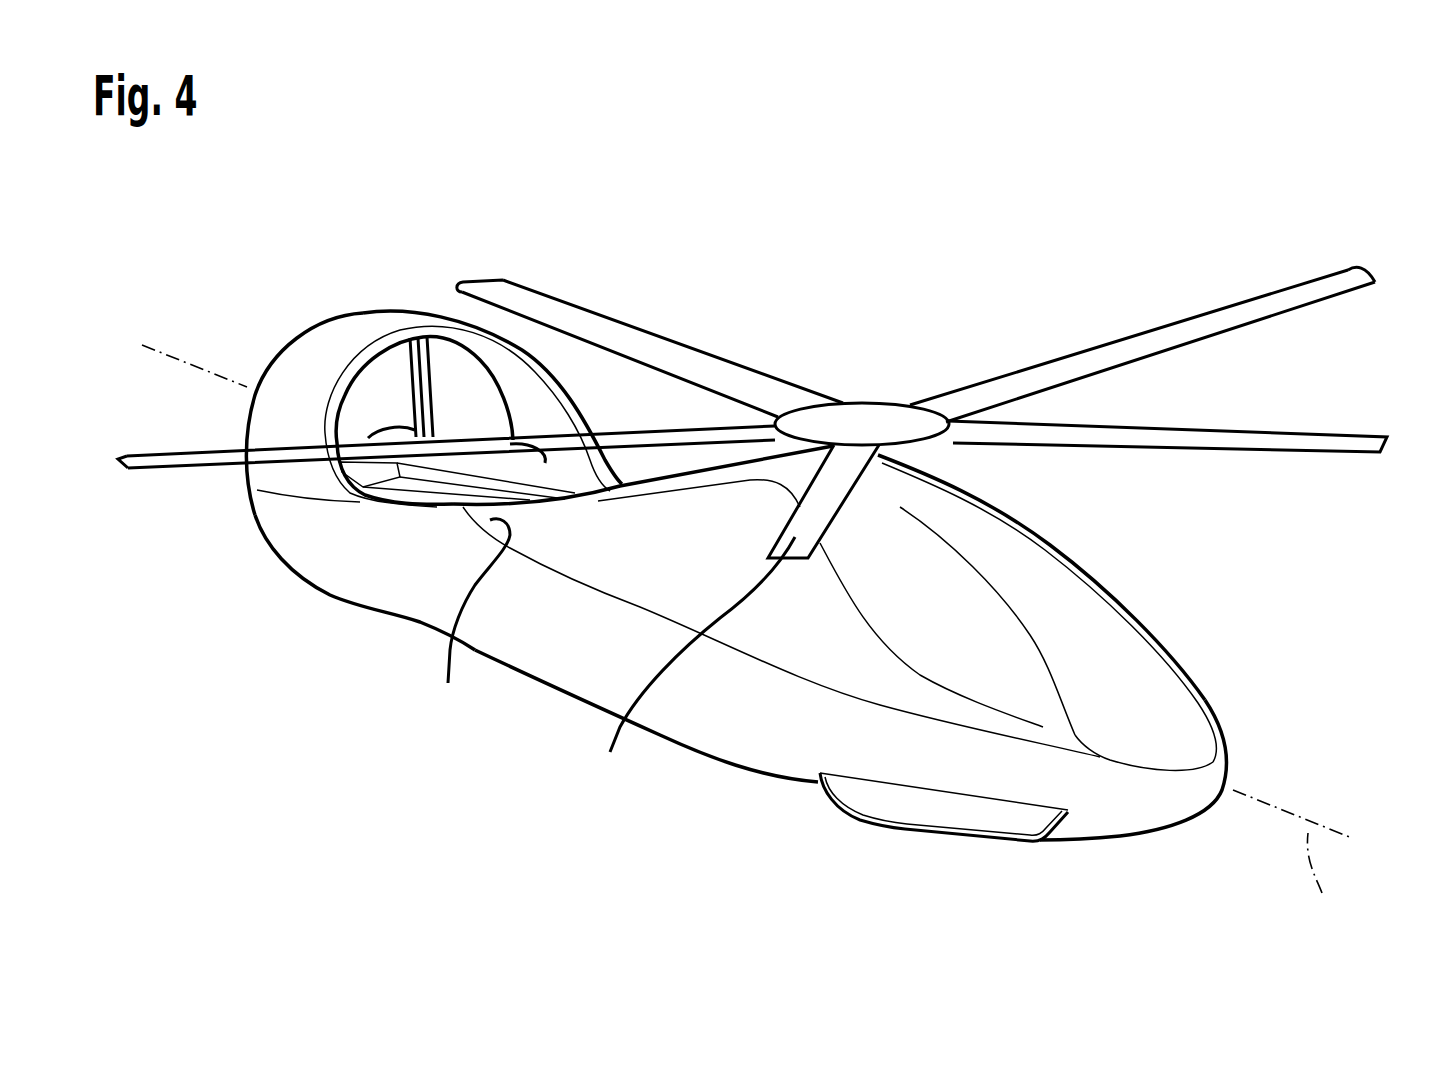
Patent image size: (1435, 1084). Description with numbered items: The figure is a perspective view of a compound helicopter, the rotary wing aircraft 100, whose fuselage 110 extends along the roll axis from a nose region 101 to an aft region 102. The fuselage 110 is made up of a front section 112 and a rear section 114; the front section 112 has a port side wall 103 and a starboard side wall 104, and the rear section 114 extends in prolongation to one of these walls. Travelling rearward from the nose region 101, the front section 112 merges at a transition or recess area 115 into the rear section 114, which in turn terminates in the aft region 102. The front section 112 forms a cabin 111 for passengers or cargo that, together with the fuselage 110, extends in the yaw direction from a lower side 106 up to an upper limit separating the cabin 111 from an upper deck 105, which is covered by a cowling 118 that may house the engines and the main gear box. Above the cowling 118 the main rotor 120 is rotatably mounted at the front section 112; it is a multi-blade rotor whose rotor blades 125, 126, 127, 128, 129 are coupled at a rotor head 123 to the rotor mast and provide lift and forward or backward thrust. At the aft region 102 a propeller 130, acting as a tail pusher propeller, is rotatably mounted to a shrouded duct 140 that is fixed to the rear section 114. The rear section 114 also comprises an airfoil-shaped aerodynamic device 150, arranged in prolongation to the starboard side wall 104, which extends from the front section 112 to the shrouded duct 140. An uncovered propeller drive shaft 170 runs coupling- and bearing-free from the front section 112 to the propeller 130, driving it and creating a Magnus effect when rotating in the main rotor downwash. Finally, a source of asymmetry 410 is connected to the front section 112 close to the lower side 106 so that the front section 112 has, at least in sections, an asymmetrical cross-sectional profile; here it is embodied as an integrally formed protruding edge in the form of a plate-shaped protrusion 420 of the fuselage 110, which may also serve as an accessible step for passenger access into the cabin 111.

The rotary wing aircraft 100 is at (1254, 210).
The nose region 101 is at (1215, 809).
The aft region 102 is at (250, 366).
The port side wall 103 is at (1072, 557).
The starboard side wall 104 is at (825, 663).
The upper deck 105 is at (950, 510).
The lower side 106 is at (774, 788).
The fuselage 110 is at (1157, 708).
The cabin 111 is at (1080, 641).
The front section 112 is at (1135, 596).
The rear section 114 is at (409, 629).
The transition or recess area 115 is at (667, 458).
The cowling 118 is at (890, 477).
The main rotor 120 is at (693, 345).
The rotor head 123 is at (880, 418).
The rotor blade 125 is at (1327, 440).
The rotor blade 126 is at (687, 668).
The rotor blade 127 is at (140, 456).
The rotor blade 128 is at (570, 315).
The rotor blade 129 is at (1353, 282).
The propeller 130 is at (393, 413).
The shrouded duct 140 is at (316, 343).
The airfoil-shaped aerodynamic device 150 is at (469, 624).
The uncovered propeller drive shaft 170 is at (553, 483).
The source of asymmetry 410 is at (923, 835).
The plate-shaped protrusion 420 is at (897, 803).